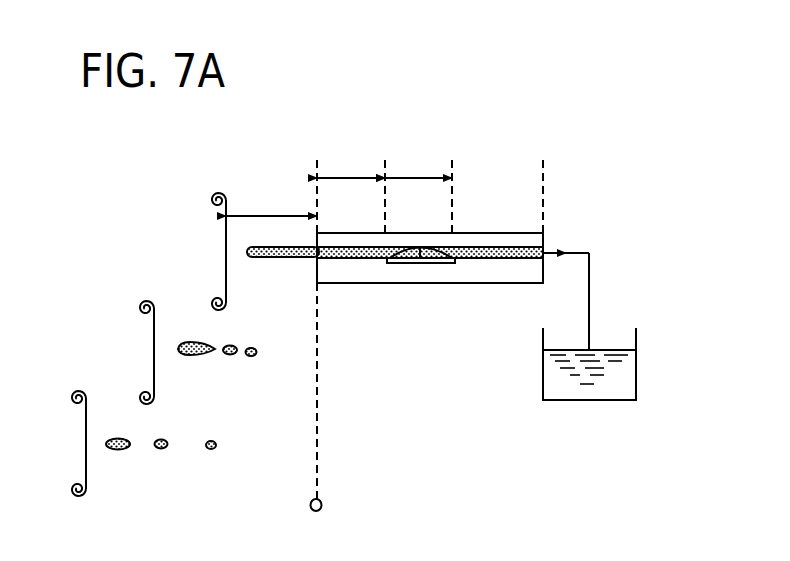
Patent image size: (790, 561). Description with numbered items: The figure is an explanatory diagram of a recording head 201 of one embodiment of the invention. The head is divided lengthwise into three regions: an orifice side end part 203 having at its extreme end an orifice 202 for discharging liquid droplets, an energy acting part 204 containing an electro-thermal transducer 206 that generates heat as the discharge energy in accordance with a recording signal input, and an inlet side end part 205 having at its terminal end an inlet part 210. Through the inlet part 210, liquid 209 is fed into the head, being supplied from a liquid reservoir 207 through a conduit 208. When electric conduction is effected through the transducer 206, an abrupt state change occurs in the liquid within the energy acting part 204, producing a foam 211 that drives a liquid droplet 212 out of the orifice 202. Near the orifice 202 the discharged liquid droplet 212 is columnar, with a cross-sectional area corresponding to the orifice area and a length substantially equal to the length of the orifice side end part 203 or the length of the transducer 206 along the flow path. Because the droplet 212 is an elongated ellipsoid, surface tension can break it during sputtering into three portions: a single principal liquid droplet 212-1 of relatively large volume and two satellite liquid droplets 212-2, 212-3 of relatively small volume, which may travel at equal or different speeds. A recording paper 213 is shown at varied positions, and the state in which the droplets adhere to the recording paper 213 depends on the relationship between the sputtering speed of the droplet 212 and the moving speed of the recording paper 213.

The recording head 201 is at (418, 286).
The orifice 202 is at (312, 260).
The orifice side end part 203 is at (351, 152).
The energy acting part 204 is at (417, 152).
The inlet side end part 205 is at (498, 165).
The electro-thermal transducer 206 is at (396, 263).
The liquid reservoir 207 is at (590, 401).
The conduit 208 is at (590, 272).
The liquid 209 is at (616, 350).
The inlet part 210 is at (520, 247).
The foam 211 is at (428, 251).
The liquid droplet 212 is at (254, 258).
The principal liquid droplet 212-1 is at (191, 356).
The satellite liquid droplet 212-2 is at (230, 355).
The satellite liquid droplet 212-3 is at (252, 357).
The recording paper 213 is at (226, 241).